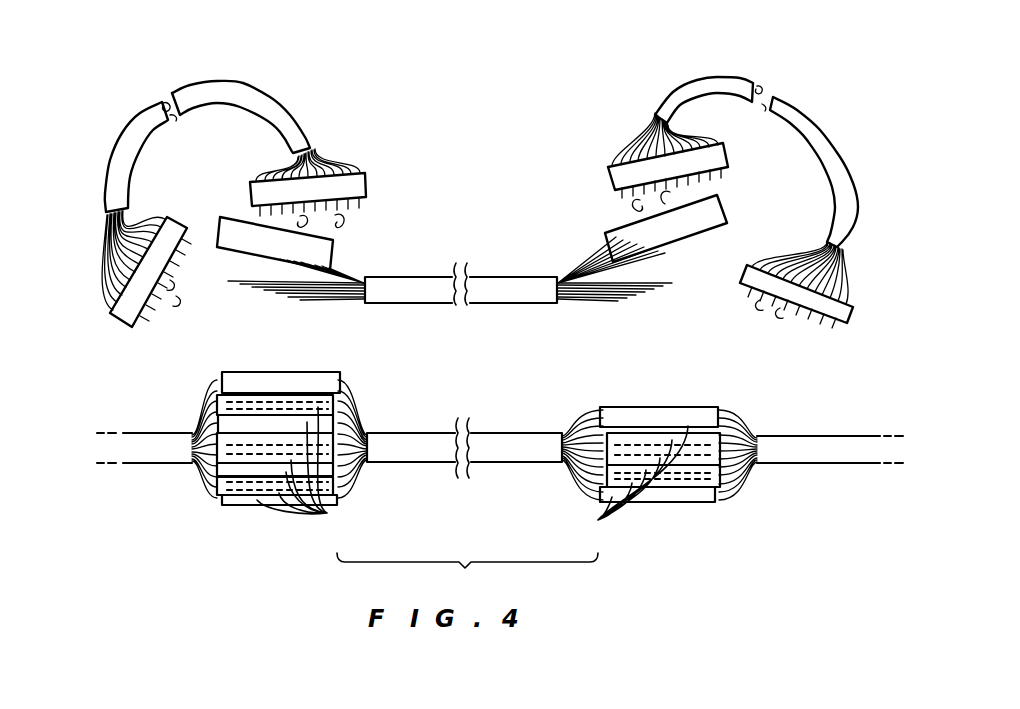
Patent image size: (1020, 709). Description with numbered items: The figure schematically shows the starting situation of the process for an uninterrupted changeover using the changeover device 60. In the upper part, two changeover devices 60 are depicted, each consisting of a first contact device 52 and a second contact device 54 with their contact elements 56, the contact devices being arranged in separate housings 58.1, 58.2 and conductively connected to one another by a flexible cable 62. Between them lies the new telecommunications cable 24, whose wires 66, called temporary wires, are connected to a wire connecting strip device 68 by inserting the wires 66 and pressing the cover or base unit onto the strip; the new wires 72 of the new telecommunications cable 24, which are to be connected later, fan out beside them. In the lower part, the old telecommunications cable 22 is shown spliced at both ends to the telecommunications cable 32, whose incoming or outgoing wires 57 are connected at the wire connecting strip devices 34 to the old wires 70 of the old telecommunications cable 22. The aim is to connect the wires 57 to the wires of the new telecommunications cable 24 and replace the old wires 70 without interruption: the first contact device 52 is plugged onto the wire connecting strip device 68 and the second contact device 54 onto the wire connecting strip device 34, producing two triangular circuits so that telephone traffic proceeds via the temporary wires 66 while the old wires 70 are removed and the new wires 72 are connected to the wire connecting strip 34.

The old telecommunications cable 22 is at (493, 437).
The new telecommunications cable 24 is at (493, 282).
The telecommunications cable 32 is at (138, 442).
The wire connecting strip device 34 is at (472, 474).
The first contact device 52 is at (372, 197).
The second contact device 54 is at (140, 329).
The contact elements 56 is at (340, 214).
The incoming or outgoing wires 57 is at (210, 468).
The housing 58.1 is at (480, 288).
The housing 58.2 is at (523, 164).
The changeover device 60 is at (481, 123).
The flexible cable 62 is at (252, 92).
The wires 66 is at (369, 277).
The wire connecting strip device 68 is at (232, 232).
The old wires 70 is at (473, 443).
The new wires 72 is at (283, 299).